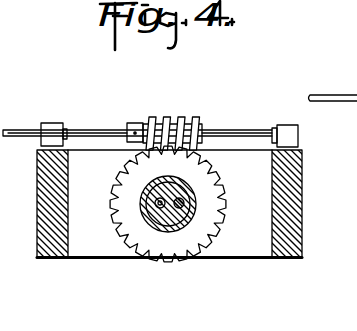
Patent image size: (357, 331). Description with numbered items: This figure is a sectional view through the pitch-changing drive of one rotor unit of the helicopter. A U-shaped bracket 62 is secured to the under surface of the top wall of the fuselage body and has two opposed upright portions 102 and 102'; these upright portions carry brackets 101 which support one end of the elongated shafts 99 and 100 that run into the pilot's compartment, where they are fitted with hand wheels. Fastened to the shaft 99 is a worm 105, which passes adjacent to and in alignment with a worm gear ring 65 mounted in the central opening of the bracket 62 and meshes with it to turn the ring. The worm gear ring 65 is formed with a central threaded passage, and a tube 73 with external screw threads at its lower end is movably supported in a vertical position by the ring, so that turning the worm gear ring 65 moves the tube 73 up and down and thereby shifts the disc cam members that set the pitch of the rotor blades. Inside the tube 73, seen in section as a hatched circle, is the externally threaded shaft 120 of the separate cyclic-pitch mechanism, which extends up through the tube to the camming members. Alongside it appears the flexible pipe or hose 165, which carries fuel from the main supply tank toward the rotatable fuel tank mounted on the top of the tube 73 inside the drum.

The elongated shaft 100 is at (43, 4).
The brackets 101 is at (53, 124).
The elongated shaft 99 is at (97, 129).
The worm 105 is at (167, 117).
The flexible pipe or hose 165 is at (155, 202).
The elongated shaft 120 is at (184, 201).
The upright portion 102 is at (85, 203).
The upright portion 102' is at (261, 203).
The U-shaped bracket 62 is at (93, 258).
The worm gear ring 65 is at (151, 245).
The tube 73 is at (187, 236).